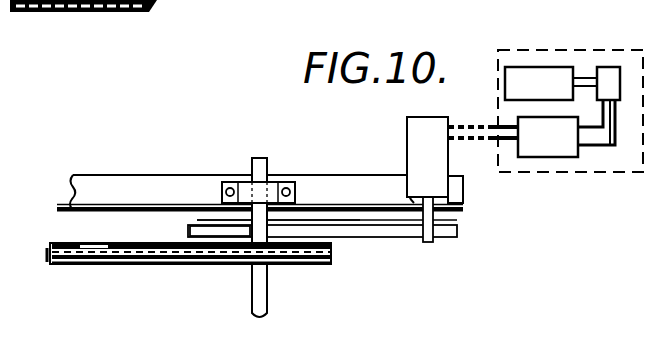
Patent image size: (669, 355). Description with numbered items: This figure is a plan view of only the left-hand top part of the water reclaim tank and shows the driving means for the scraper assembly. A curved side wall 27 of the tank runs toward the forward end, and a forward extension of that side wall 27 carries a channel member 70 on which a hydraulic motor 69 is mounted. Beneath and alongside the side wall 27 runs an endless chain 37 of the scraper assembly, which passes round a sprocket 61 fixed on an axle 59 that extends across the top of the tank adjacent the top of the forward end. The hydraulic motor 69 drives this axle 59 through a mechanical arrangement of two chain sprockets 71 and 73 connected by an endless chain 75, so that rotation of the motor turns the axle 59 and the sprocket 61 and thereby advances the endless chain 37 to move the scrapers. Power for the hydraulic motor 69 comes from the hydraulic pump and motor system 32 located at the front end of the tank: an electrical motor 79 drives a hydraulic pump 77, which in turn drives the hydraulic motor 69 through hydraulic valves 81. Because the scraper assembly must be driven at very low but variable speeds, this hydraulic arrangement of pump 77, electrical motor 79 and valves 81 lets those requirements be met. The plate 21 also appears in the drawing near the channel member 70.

The support plate 21 is at (460, 212).
The side wall 27 is at (65, 204).
The hydraulic pump and motor system 32 is at (498, 50).
The endless chain 37 is at (95, 267).
The axle 59 is at (268, 293).
The sprocket 61 is at (244, 265).
The hydraulic motor 69 is at (419, 150).
The channel member 70 is at (455, 190).
The chain sprocket 71 is at (452, 238).
The chain sprocket 73 is at (200, 226).
The endless chain 75 is at (360, 237).
The hydraulic pump 77 is at (607, 72).
The electrical motor 79 is at (537, 78).
The hydraulic valves 81 is at (550, 142).